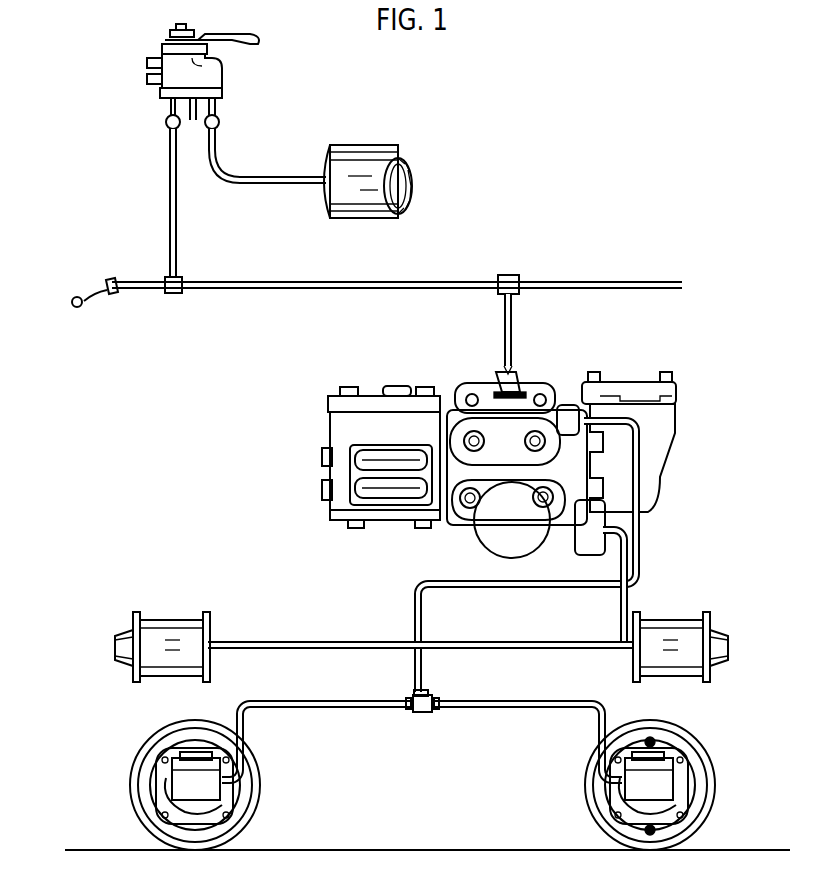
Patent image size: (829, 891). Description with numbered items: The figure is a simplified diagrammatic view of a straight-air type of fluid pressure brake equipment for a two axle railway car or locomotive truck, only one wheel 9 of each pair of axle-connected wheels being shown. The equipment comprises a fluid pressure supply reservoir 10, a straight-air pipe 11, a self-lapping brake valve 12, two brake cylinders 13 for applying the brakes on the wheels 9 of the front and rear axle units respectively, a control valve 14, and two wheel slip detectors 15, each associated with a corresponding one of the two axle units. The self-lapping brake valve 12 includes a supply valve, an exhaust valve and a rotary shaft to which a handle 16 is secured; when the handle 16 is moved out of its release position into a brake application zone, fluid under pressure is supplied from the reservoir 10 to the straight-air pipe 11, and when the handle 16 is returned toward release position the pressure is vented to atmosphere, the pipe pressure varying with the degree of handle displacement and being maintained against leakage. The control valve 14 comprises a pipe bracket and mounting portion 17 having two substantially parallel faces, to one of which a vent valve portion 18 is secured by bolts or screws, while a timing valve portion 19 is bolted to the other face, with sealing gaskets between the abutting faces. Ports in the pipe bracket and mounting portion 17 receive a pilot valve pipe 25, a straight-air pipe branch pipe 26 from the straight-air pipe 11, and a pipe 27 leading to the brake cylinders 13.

The wheel 9 is at (245, 810).
The fluid pressure supply reservoir 10 is at (374, 214).
The straight-air pipe 11 is at (281, 285).
The self-lapping brake valve 12 is at (212, 82).
The brake cylinder 13 is at (168, 668).
The control valve 14 is at (563, 384).
The wheel slip detector 15 is at (250, 794).
The handle 16 is at (255, 43).
The pipe bracket and mounting portion 17 is at (526, 393).
The vent valve portion 18 is at (633, 385).
The timing valve portion 19 is at (380, 398).
The pilot valve pipe 25 is at (637, 569).
The straight-air pipe branch pipe 26 is at (512, 318).
The pipe leading to the brake cylinders 27 is at (629, 596).